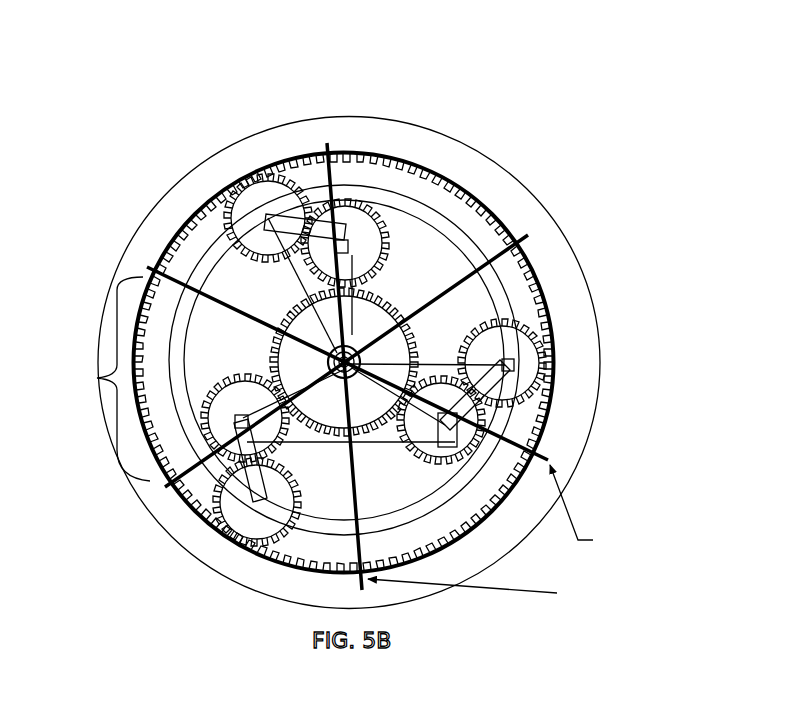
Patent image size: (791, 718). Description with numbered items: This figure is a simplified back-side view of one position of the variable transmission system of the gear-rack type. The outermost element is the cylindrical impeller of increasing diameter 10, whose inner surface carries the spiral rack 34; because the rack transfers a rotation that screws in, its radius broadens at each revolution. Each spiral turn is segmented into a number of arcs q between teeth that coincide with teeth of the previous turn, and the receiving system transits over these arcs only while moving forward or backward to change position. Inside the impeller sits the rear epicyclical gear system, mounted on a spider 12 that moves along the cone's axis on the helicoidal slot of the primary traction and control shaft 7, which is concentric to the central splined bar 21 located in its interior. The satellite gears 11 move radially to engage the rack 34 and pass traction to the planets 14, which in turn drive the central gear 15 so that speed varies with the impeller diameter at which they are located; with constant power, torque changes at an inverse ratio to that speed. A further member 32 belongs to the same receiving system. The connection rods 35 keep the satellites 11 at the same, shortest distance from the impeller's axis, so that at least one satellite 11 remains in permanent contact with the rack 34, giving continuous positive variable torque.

The primary traction and control shaft 7 is at (357, 350).
The cylindrical impeller of increasing diameter 10 is at (558, 428).
The satellite gears 11 is at (280, 200).
The spider 12 is at (353, 332).
The planets 14 is at (338, 245).
The central gear 15 is at (372, 297).
The central splined bar 21 is at (362, 358).
The receiving system component 32 is at (291, 226).
The spiral rack 34 is at (548, 458).
The connection rods 35 is at (277, 313).
The arcs q is at (103, 379).